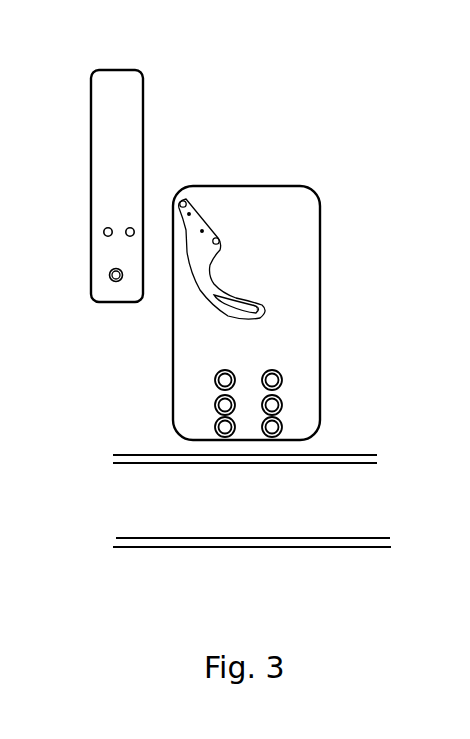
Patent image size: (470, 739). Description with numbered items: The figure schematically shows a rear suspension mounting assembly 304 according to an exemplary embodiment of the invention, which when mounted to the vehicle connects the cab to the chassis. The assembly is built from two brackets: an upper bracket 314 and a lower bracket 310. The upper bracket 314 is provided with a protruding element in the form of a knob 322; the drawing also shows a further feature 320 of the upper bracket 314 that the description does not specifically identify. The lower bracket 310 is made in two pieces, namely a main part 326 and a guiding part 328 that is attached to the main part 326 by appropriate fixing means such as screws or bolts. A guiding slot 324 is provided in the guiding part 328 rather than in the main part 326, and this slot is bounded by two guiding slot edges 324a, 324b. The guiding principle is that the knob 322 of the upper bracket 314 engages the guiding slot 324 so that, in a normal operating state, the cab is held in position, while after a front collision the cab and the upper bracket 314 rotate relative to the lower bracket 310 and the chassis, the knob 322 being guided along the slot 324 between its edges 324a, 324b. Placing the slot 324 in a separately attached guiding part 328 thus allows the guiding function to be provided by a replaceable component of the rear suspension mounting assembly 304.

The rear suspension mounting assembly 304 is at (343, 163).
The lower bracket 310 is at (192, 350).
The upper bracket 314 is at (123, 140).
The aperture 320 is at (133, 229).
The knob 322 is at (112, 280).
The guiding slot 324 is at (220, 300).
The guiding slot edge 324a is at (260, 313).
The guiding slot edge 324b is at (216, 300).
The main part 326 is at (238, 267).
The guiding part 328 is at (200, 238).